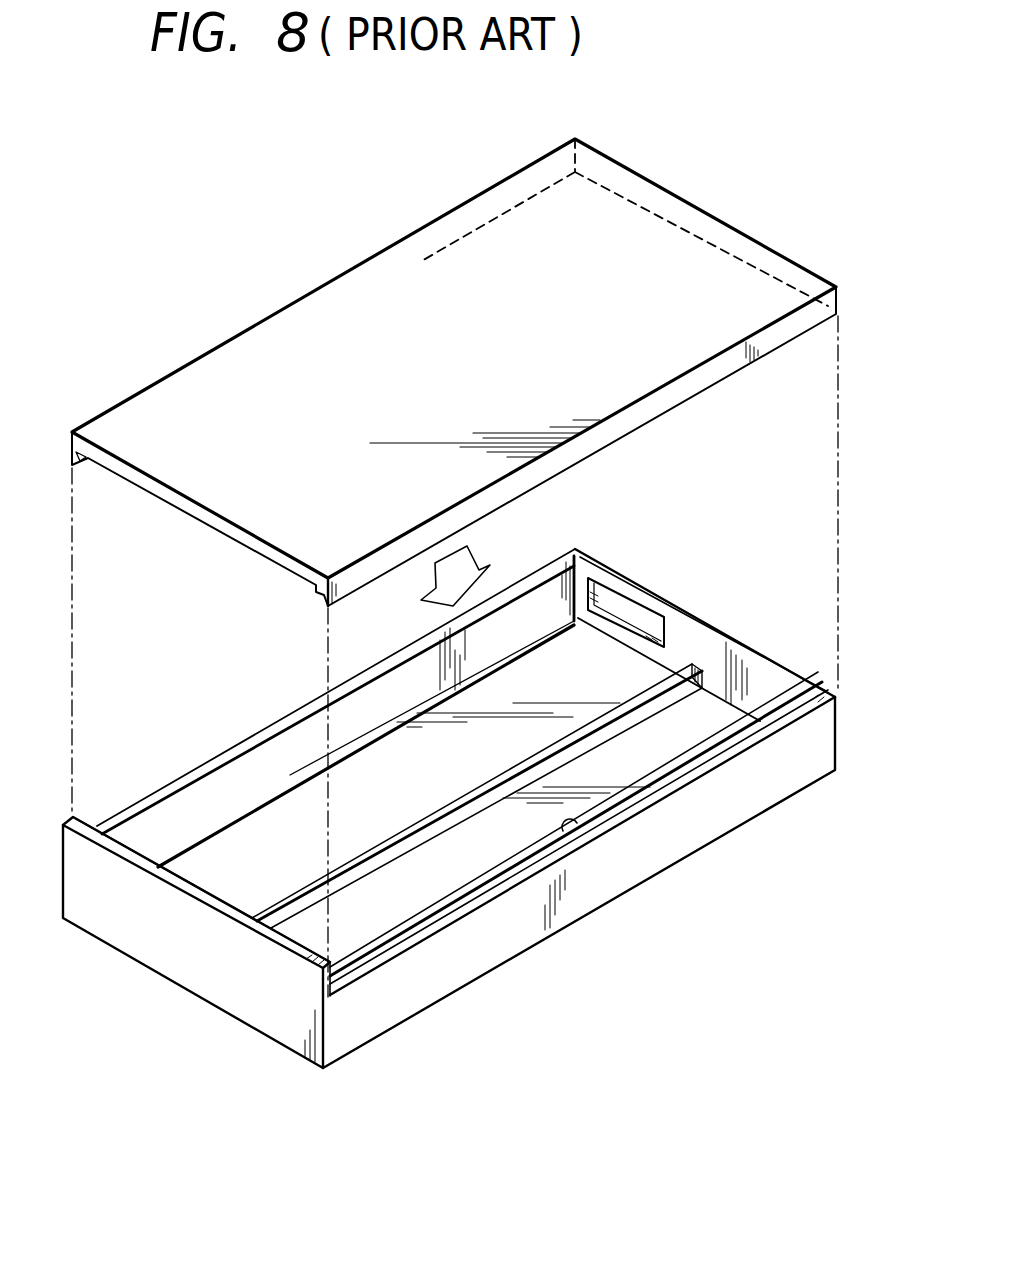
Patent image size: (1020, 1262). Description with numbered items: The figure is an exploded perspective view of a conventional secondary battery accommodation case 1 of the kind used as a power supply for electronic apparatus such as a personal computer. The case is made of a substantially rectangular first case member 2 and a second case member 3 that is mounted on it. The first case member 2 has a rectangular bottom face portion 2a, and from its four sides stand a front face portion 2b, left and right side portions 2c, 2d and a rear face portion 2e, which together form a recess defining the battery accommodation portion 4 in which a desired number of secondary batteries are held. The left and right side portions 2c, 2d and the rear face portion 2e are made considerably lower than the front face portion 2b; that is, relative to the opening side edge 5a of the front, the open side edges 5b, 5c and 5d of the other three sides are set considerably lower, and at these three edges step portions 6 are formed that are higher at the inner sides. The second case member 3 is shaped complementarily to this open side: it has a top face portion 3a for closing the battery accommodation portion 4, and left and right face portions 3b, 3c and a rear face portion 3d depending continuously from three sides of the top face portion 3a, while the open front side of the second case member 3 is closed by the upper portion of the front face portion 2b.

The secondary battery accommodation case 1 is at (428, 172).
The first case member 2 is at (530, 948).
The bottom face portion 2a is at (660, 748).
The front face portion 2b is at (222, 995).
The right side portion 2c is at (418, 992).
The left side portion 2d is at (156, 790).
The rear face portion 2e is at (768, 650).
The second case member 3 is at (200, 352).
The top face portion 3a is at (316, 320).
The right face portion 3b is at (665, 400).
The left face portion 3c is at (72, 452).
The rear face portion 3d is at (735, 240).
The battery accommodation portion 4 is at (262, 830).
The opening side edge 5a is at (207, 905).
The open side edge 5b is at (593, 830).
The open side edge 5c is at (292, 720).
The open side edge 5d is at (694, 608).
The step portion 6 is at (620, 813).